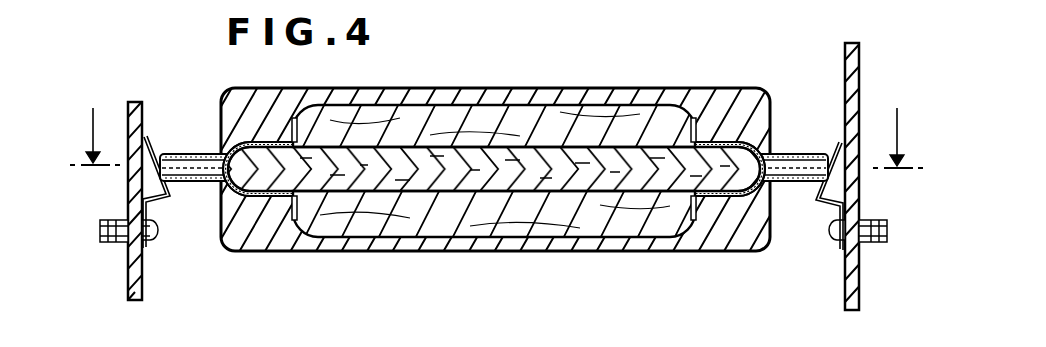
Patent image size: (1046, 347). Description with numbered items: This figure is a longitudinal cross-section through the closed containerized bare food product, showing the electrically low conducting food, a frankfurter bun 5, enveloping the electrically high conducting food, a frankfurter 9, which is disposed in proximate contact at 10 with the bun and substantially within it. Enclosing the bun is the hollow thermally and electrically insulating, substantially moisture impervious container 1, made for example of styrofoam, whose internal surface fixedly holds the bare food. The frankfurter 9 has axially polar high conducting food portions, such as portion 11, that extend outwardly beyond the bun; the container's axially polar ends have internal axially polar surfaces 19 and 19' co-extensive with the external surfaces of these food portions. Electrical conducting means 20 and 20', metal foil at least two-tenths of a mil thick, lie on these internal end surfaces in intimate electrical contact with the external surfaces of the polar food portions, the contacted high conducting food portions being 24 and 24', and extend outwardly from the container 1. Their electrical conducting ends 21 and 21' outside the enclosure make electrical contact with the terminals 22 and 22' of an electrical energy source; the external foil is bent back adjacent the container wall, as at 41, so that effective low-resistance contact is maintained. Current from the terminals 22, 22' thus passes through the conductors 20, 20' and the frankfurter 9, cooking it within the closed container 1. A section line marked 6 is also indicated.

The container 1 is at (746, 84).
The frankfurter bun 5 is at (575, 127).
The section line 6 is at (496, 154).
The frankfurter 9 is at (442, 180).
The proximate contact 10 is at (422, 144).
The axially polar high conducting food portion 11 is at (287, 178).
The internal axially polar surface 19 is at (258, 128).
The internal axially polar surface 19' is at (755, 127).
The electrical conducting means 20 is at (229, 186).
The electrical conducting means 20' is at (725, 119).
The electrical conducting end 21 is at (201, 139).
The electrical conducting end 21' is at (785, 143).
The terminal 22 is at (167, 202).
The terminal 22' is at (809, 209).
The contacted high conducting food portion 24 is at (252, 219).
The contacted high conducting food portion 24' is at (685, 219).
The bent back portion 41 is at (195, 153).